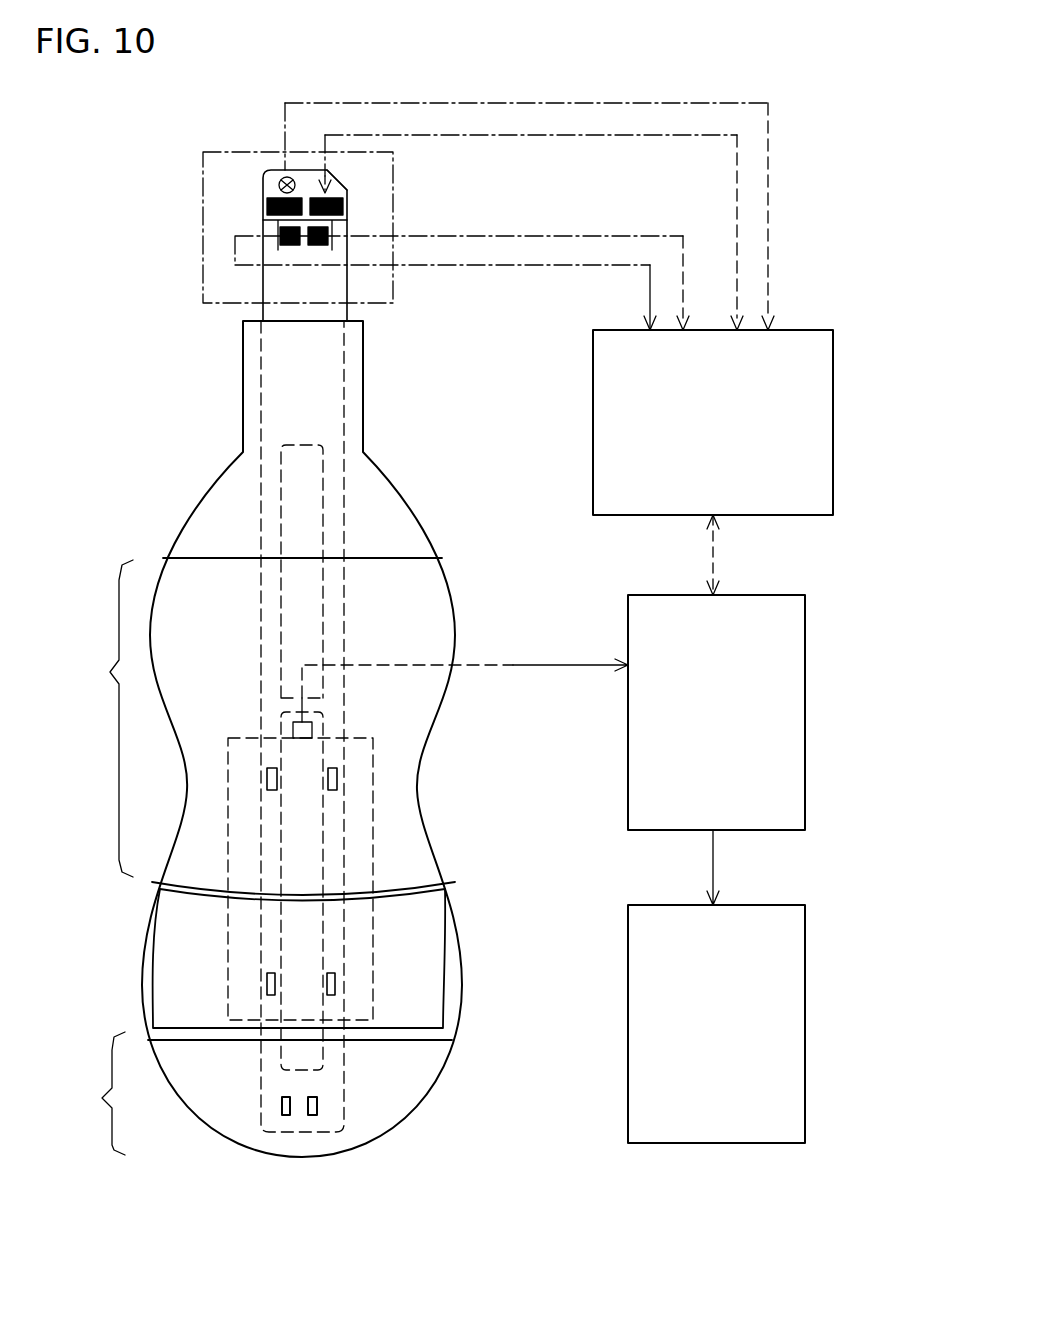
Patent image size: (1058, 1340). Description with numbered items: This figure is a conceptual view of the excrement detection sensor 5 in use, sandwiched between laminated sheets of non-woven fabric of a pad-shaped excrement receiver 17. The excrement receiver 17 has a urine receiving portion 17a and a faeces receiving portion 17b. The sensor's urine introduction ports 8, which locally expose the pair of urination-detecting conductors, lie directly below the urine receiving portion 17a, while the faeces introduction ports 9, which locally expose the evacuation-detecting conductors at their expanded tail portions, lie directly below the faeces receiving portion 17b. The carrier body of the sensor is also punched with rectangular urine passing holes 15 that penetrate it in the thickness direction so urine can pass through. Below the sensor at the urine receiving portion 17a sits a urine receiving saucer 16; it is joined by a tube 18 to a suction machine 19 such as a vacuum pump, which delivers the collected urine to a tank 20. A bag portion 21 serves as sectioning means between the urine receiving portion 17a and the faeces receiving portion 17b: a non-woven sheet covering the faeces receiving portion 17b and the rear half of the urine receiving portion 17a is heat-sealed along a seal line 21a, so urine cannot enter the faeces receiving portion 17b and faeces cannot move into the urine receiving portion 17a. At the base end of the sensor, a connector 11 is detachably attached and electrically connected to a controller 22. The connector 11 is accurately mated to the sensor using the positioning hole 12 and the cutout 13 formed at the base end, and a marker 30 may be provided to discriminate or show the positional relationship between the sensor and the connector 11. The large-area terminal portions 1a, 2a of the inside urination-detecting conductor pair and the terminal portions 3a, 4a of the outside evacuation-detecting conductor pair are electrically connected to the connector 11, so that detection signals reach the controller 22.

The terminal portion 1a is at (281, 238).
The terminal portion 2a is at (329, 240).
The terminal portion 3a is at (266, 204).
The terminal portion 4a is at (344, 204).
The excrement detection sensor 5 is at (256, 542).
The urine introduction port 8 is at (265, 782).
The faeces introduction port 9 is at (280, 1116).
The connector 11 is at (218, 152).
The positioning hole 12 is at (284, 177).
The cutout 13 is at (334, 178).
The urine passing hole 15 is at (318, 492).
The urine receiving saucer 16 is at (374, 937).
The excrement receiver 17 is at (201, 466).
The urine receiving portion 17a is at (97, 718).
The faeces receiving portion 17b is at (92, 1093).
The tube 18 is at (515, 663).
The suction machine 19 is at (790, 693).
The tank 20 is at (788, 1045).
The bag portion 21 is at (418, 1015).
The seal line 21a is at (398, 1040).
The controller 22 is at (812, 373).
The marker 30 is at (321, 178).